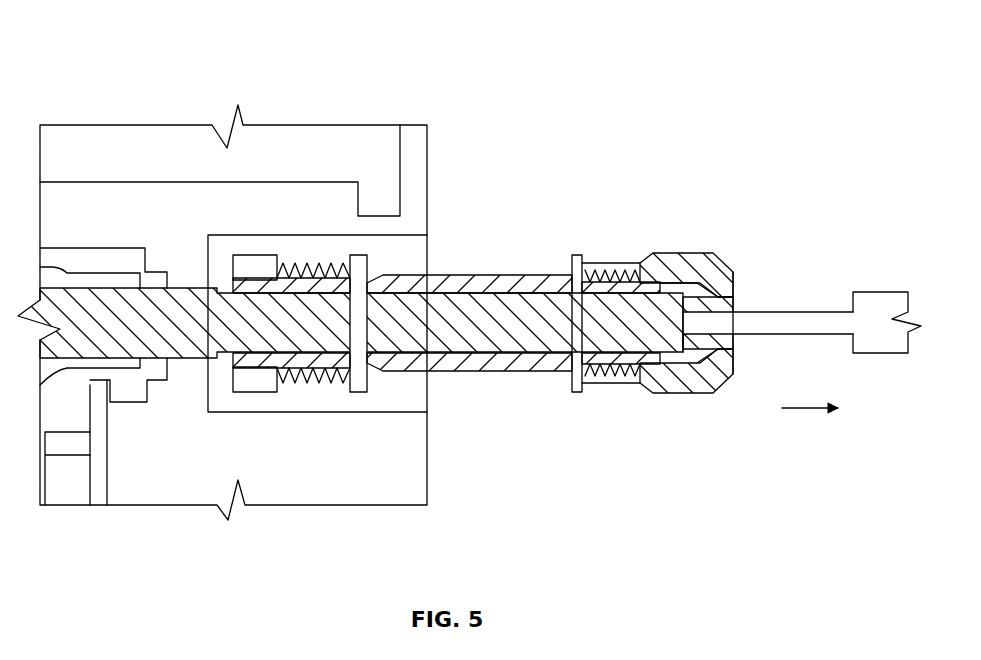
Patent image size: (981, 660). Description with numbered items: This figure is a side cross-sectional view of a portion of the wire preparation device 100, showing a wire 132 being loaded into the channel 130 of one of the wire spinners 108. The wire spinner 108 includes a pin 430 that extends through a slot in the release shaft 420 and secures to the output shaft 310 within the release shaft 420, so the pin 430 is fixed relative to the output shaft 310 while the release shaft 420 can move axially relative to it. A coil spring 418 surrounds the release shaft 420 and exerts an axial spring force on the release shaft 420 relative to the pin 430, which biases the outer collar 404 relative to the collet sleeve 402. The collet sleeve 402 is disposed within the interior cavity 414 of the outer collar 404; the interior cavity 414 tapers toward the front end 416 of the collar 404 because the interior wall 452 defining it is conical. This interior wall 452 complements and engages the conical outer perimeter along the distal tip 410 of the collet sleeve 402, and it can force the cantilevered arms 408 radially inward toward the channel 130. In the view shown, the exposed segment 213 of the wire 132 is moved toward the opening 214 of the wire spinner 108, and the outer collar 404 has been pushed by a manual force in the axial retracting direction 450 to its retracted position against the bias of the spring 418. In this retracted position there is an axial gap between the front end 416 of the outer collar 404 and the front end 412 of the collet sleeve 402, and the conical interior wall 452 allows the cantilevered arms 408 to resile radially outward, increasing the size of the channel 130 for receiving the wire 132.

The wire preparation device 100 is at (357, 50).
The wire spinner 108 is at (665, 210).
The channel 130 is at (692, 347).
The wire 132 is at (838, 312).
The exposed segment 213 is at (800, 320).
The opening 214 is at (740, 300).
The output shaft 310 is at (437, 330).
The collet sleeve 402 is at (630, 345).
The outer collar 404 is at (690, 260).
The cantilevered arms 408 is at (650, 288).
The distal tip 410 is at (708, 285).
The front end 412 is at (722, 290).
The interior cavity 414 is at (724, 352).
The front end 416 is at (735, 290).
The coil spring 418 is at (300, 262).
The release shaft 420 is at (497, 285).
The pin 430 is at (360, 310).
The axial retracting direction 450 is at (815, 408).
The interior wall 452 is at (745, 325).